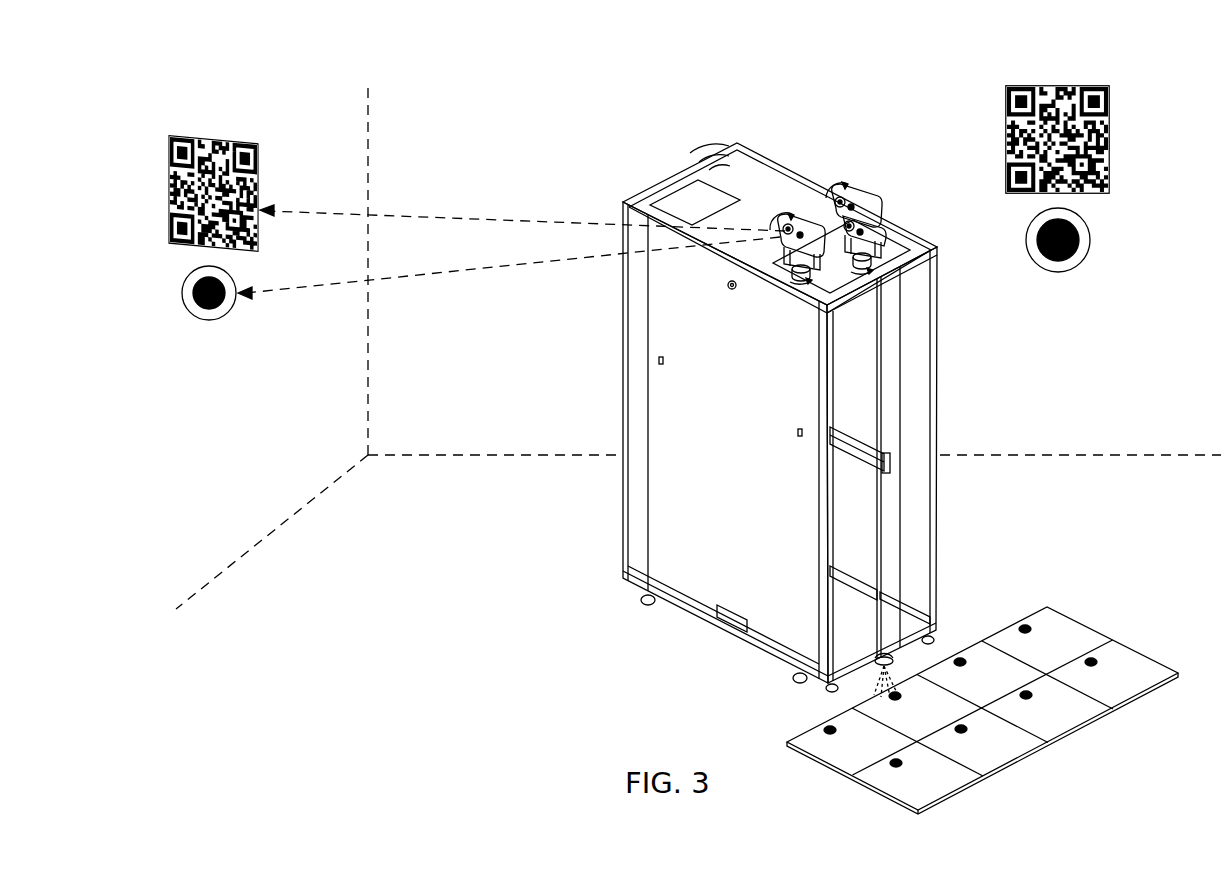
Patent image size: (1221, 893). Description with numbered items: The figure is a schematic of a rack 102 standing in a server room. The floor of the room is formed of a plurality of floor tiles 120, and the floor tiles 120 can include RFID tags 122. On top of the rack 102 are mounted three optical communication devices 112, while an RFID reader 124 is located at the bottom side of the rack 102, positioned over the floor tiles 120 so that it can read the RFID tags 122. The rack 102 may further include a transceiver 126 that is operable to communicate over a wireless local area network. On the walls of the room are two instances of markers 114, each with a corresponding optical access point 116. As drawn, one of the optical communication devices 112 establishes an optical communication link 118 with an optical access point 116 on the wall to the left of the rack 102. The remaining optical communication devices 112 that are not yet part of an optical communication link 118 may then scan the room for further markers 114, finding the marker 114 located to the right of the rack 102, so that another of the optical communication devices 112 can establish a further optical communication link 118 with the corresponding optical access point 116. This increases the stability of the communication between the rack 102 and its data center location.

The rack 102 is at (962, 397).
The optical communication device 112 is at (808, 222).
The marker 114 is at (213, 137).
The optical access point 116 is at (209, 320).
The optical communication link 118 is at (457, 270).
The floor tile 120 is at (1097, 637).
The RFID tag 122 is at (1027, 624).
The RFID reader 124 is at (893, 662).
The transceiver 126 is at (688, 195).